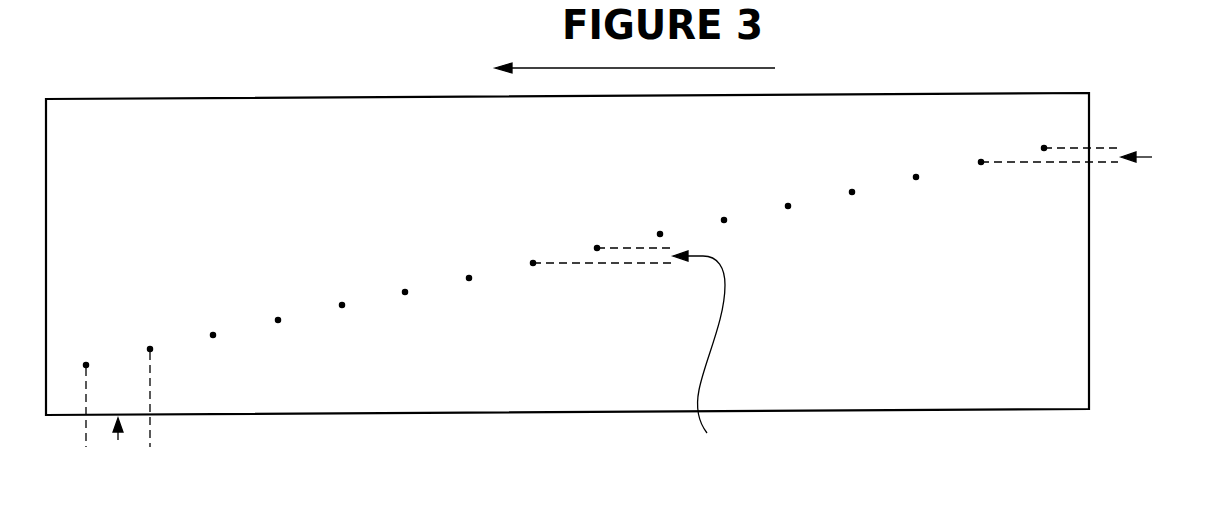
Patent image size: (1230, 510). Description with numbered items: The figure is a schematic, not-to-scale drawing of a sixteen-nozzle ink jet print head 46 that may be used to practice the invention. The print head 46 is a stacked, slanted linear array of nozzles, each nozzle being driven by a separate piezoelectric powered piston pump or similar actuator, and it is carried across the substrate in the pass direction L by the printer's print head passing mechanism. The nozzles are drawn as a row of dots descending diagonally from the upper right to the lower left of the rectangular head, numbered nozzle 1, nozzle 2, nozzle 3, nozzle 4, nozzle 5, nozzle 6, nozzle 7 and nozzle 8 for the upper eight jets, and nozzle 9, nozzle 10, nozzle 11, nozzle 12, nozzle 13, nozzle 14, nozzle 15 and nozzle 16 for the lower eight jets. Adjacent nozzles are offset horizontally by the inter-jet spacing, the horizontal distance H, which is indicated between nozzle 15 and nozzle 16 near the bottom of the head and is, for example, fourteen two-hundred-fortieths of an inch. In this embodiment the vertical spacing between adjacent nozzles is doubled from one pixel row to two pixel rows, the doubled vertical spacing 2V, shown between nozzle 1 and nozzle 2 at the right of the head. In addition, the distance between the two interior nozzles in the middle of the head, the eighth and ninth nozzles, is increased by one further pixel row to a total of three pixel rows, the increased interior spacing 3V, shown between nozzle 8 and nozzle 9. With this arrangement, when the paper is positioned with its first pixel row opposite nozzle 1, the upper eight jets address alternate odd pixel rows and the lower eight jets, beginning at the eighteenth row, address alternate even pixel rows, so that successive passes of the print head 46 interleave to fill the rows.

The nozzle 1 is at (1047, 134).
The nozzle 2 is at (983, 149).
The nozzle 3 is at (917, 164).
The nozzle 4 is at (854, 179).
The nozzle 5 is at (790, 192).
The nozzle 6 is at (725, 207).
The nozzle 7 is at (661, 221).
The nozzle 8 is at (598, 235).
The nozzle 9 is at (535, 250).
The nozzle 10 is at (470, 265).
The nozzle 11 is at (405, 279).
The nozzle 12 is at (341, 292).
The nozzle 13 is at (277, 307).
The nozzle 14 is at (212, 322).
The nozzle 15 is at (150, 383).
The nozzle 16 is at (86, 391).
The print head 46 is at (288, 413).
The doubled vertical spacing 2V is at (1087, 156).
The increased interior spacing 3V is at (634, 356).
The horizontal distance H is at (119, 443).
The pass direction L is at (618, 71).